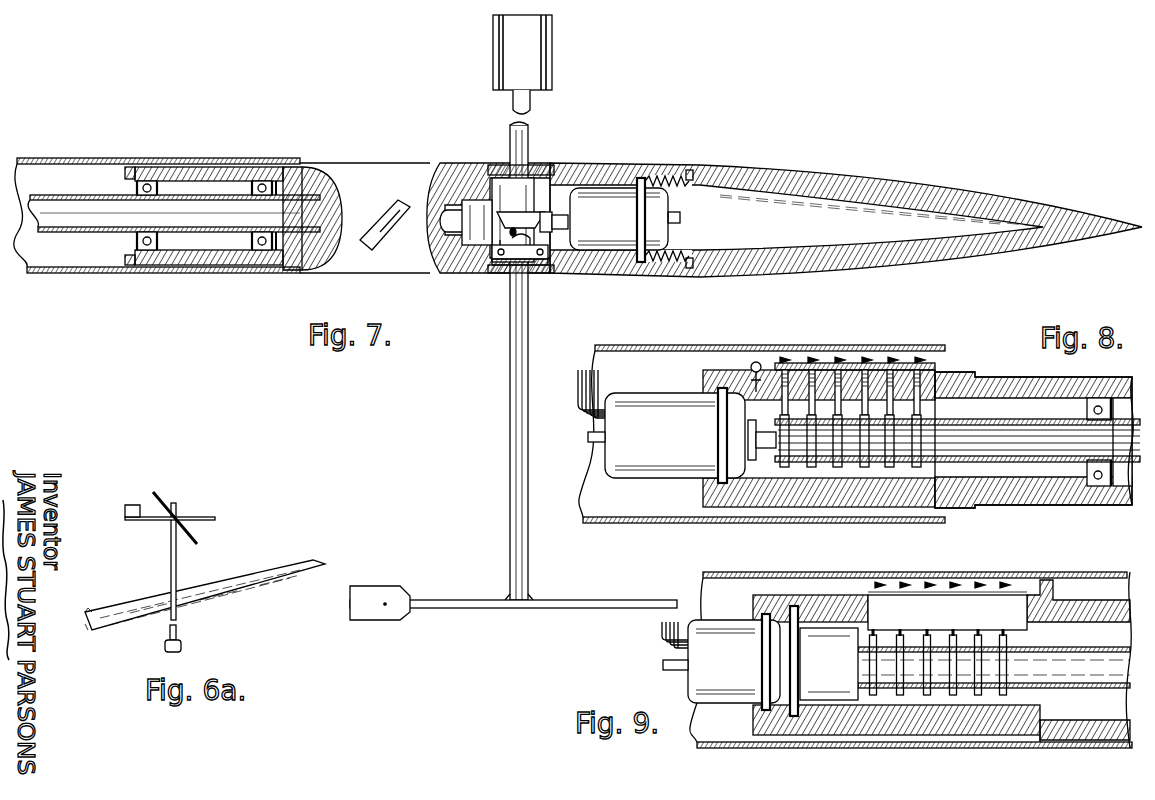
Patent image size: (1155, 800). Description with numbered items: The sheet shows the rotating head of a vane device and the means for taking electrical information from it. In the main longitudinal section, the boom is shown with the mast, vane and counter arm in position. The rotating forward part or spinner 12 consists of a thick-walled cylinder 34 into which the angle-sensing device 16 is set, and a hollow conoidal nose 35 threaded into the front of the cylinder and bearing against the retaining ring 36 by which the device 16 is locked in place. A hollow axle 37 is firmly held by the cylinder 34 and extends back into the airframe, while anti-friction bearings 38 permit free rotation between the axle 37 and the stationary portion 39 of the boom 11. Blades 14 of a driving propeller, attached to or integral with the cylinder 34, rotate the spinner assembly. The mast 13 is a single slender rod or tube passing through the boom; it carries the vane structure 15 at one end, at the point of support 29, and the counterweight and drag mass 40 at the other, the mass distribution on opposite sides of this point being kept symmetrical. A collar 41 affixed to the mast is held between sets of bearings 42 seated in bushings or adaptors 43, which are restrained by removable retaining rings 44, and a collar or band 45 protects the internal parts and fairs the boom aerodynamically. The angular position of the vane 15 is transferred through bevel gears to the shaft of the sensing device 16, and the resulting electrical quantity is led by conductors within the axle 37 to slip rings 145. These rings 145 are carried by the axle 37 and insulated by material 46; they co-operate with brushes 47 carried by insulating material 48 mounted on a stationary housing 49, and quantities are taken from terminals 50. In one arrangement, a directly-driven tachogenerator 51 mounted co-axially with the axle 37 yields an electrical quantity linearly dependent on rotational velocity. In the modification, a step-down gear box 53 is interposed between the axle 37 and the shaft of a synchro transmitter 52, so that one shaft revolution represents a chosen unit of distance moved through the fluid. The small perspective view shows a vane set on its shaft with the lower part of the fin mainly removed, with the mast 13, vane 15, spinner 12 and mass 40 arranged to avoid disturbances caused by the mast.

In FIG. 7, the outer tube 11 is at (122, 160).
In FIG. 7, the spinner 12 is at (586, 144).
In FIG. 6A, the spinner 12 is at (228, 596).
In FIG. 7, the mast 13 is at (510, 396).
In FIG. 6A, the mast 13 is at (177, 553).
In FIG. 7, the blades 14 is at (392, 230).
In FIG. 7, the vane structure 15 is at (488, 598).
In FIG. 6A, the vane structure 15 is at (170, 513).
In FIG. 7, the angle-sensing device 16 is at (662, 206).
In FIG. 7, the point of support 29 is at (530, 600).
In FIG. 7, the thick-walled cylinder 34 is at (452, 270).
In FIG. 7, the hollow conoidal nose 35 is at (843, 170).
In FIG. 7, the retaining ring 36 is at (648, 172).
In FIG. 7, the hollow axle 37 is at (320, 160).
In FIG. 9, the hollow axle 37 is at (1092, 652).
In FIG. 7, the anti-friction bearings 38 is at (153, 252).
In FIG. 7, the stationary portion of the boom 39 is at (245, 270).
In FIG. 7, the counterweight and drag mass 40 is at (500, 68).
In FIG. 6A, the counterweight and drag mass 40 is at (168, 634).
In FIG. 7, the collar 41 is at (503, 220).
In FIG. 7, the bearings 42 is at (498, 268).
In FIG. 7, the bushings or adaptors 43 is at (466, 178).
In FIG. 7, the removable retaining rings 44 is at (572, 168).
In FIG. 7, the collar or band 45 is at (494, 176).
In FIG. 8, the insulating material 46 is at (950, 402).
In FIG. 8, the brushes 47 is at (780, 400).
In FIG. 8, the insulating material 48 is at (756, 362).
In FIG. 8, the stationary housing 49 is at (752, 506).
In FIG. 8, the terminals 50 is at (838, 365).
In FIG. 9, the terminals 50 is at (915, 596).
In FIG. 8, the tachogenerator 51 is at (636, 480).
In FIG. 9, the synchro transmitter 52 is at (706, 700).
In FIG. 9, the step-down gear box 53 is at (818, 628).
In FIG. 8, the slip rings 145 is at (825, 470).